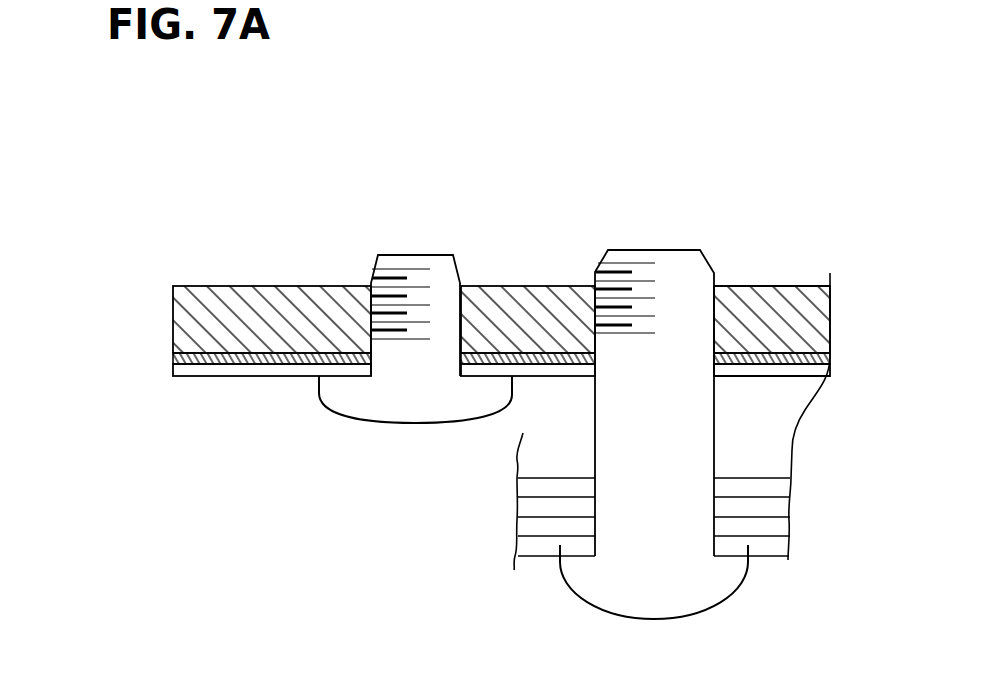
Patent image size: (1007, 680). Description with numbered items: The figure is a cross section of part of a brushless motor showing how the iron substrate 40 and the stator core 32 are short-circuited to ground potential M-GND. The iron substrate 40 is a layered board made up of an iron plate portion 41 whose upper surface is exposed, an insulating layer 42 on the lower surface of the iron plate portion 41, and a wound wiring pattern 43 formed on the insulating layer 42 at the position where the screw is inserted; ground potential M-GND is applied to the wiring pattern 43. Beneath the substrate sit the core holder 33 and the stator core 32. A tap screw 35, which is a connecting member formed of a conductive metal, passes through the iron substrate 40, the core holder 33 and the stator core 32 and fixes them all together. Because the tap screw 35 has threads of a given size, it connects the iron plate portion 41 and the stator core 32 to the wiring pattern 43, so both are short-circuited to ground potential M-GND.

The iron substrate 40 is at (427, 377).
The iron plate portion 41 is at (178, 307).
The insulating layer 42 is at (176, 362).
The wound wiring pattern 43 is at (185, 372).
The core holder 33 is at (857, 377).
The stator core 32 is at (857, 477).
The tap screw 35 is at (722, 592).